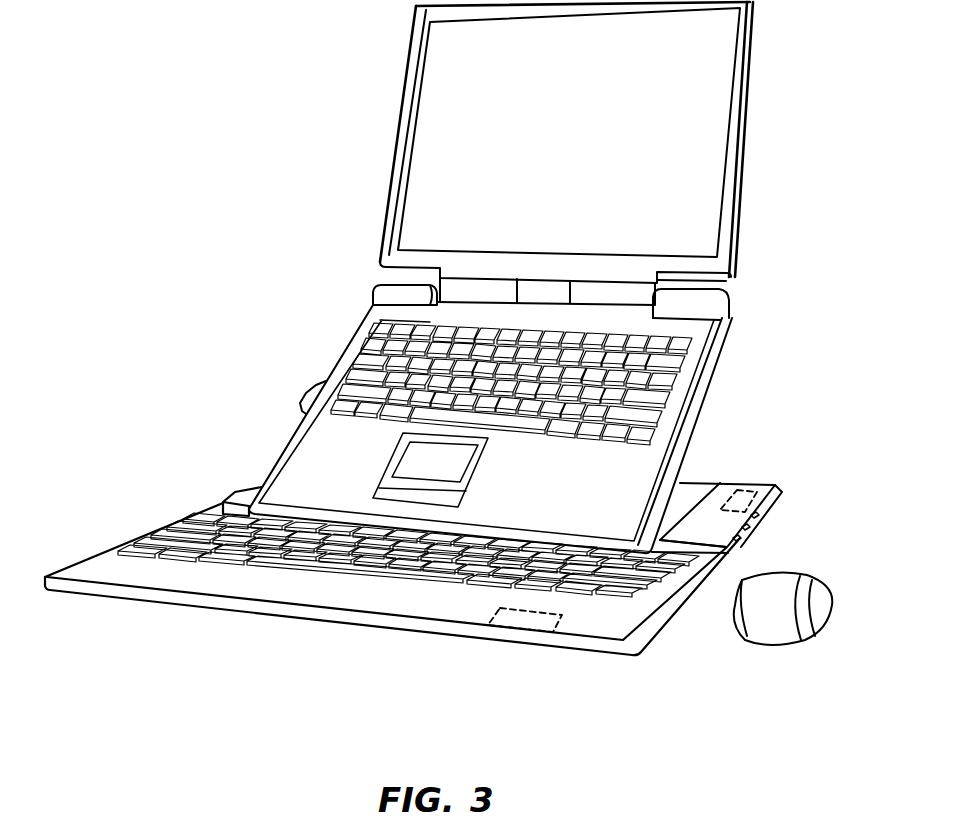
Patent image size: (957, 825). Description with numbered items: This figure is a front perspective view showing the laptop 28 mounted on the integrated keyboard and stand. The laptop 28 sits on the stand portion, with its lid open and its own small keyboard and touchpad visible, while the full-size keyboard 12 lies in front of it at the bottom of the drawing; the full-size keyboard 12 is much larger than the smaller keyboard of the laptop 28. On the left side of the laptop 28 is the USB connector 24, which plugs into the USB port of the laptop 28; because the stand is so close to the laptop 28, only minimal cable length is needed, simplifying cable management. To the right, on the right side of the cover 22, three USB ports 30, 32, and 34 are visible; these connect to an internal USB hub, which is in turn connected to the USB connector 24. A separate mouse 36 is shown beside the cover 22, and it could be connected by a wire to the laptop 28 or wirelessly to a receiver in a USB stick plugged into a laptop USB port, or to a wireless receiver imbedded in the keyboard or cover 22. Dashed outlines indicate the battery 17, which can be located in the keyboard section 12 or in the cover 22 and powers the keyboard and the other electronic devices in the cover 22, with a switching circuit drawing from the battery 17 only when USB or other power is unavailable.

The keyboard 12 is at (153, 532).
The battery 17 is at (507, 623).
The cover 22 is at (717, 483).
The USB connector 24 is at (323, 380).
The laptop 28 is at (733, 312).
The USB port 30 is at (757, 522).
The USB port 32 is at (748, 531).
The USB port 34 is at (737, 545).
The mouse 36 is at (820, 590).